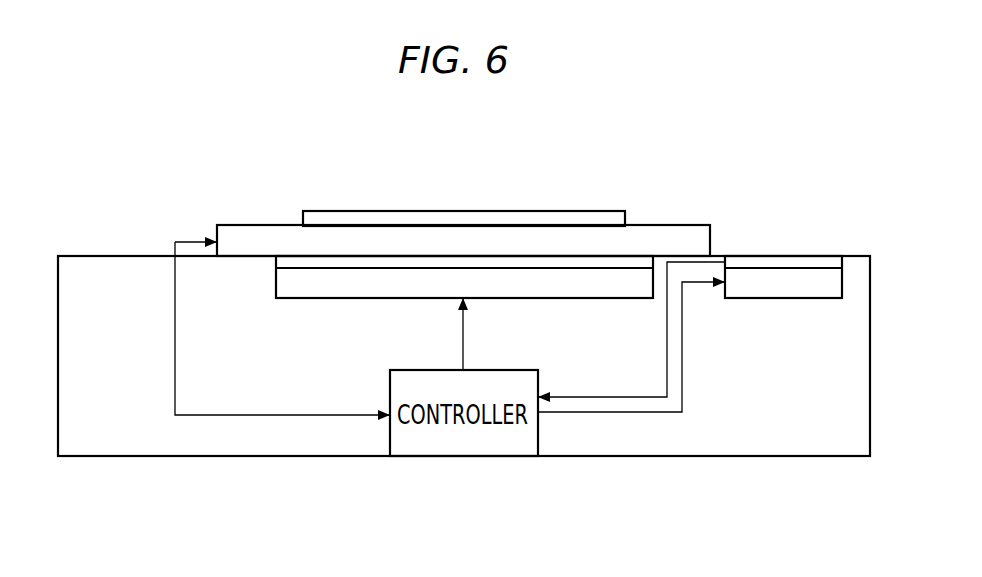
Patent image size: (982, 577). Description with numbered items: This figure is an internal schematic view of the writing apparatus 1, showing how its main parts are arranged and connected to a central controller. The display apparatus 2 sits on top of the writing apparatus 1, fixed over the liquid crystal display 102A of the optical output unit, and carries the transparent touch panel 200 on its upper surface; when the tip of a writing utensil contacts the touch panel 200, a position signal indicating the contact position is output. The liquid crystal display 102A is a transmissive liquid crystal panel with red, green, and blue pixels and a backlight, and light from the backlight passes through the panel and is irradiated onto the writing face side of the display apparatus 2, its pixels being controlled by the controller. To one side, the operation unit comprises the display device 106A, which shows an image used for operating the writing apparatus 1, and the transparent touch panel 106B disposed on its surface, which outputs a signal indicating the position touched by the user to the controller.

The writing apparatus 1 is at (341, 473).
The display apparatus 2 is at (311, 197).
The touch panel 200 is at (575, 211).
The liquid crystal display 102A is at (373, 278).
The display device 106A is at (815, 283).
The touch panel 106B is at (752, 262).